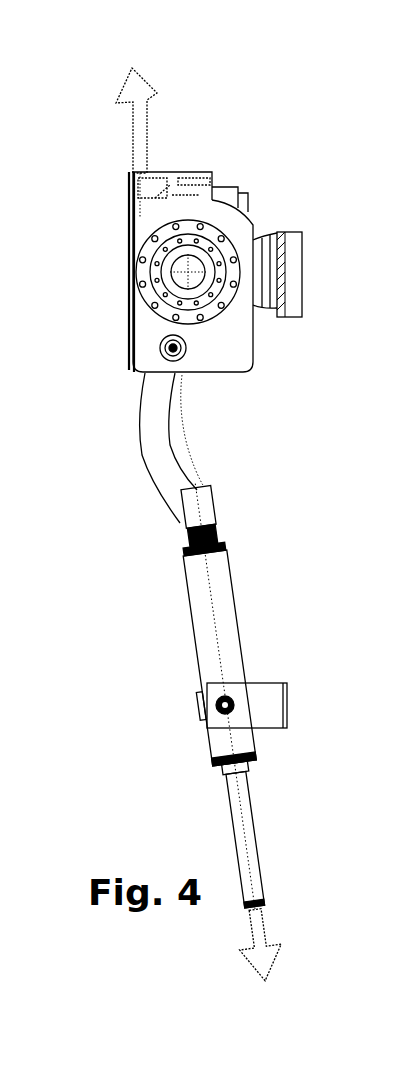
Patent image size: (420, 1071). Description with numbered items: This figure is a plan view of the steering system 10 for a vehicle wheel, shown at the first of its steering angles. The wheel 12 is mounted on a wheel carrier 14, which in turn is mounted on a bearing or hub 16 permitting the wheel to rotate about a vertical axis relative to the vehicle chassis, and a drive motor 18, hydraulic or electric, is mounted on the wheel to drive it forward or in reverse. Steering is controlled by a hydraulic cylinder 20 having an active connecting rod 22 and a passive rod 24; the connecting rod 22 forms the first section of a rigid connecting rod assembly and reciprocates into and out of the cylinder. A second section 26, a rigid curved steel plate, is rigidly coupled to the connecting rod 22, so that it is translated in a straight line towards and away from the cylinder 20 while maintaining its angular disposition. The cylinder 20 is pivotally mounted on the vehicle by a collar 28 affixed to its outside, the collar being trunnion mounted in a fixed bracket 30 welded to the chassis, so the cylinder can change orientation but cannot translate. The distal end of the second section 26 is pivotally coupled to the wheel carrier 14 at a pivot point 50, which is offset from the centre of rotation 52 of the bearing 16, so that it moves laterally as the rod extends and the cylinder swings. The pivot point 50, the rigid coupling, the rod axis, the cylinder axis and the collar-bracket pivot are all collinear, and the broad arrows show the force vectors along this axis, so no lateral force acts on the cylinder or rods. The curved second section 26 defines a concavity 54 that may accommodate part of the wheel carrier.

The hydraulic pump assembly 10 is at (318, 556).
The wheel 12 is at (143, 205).
The wheel carrier 14 is at (147, 325).
The bearing or hub 16 is at (206, 316).
The drive motor 18 is at (290, 262).
The hydraulic cylinder 20 is at (208, 657).
The active connecting rod 22 is at (195, 551).
The passive rod 24 is at (238, 817).
The second section 26 is at (143, 438).
The collar 28 is at (200, 710).
The fixed bracket 30 is at (260, 690).
The pivot point 50 is at (178, 357).
The centre of rotation 52 is at (188, 270).
The concavity 54 is at (178, 433).